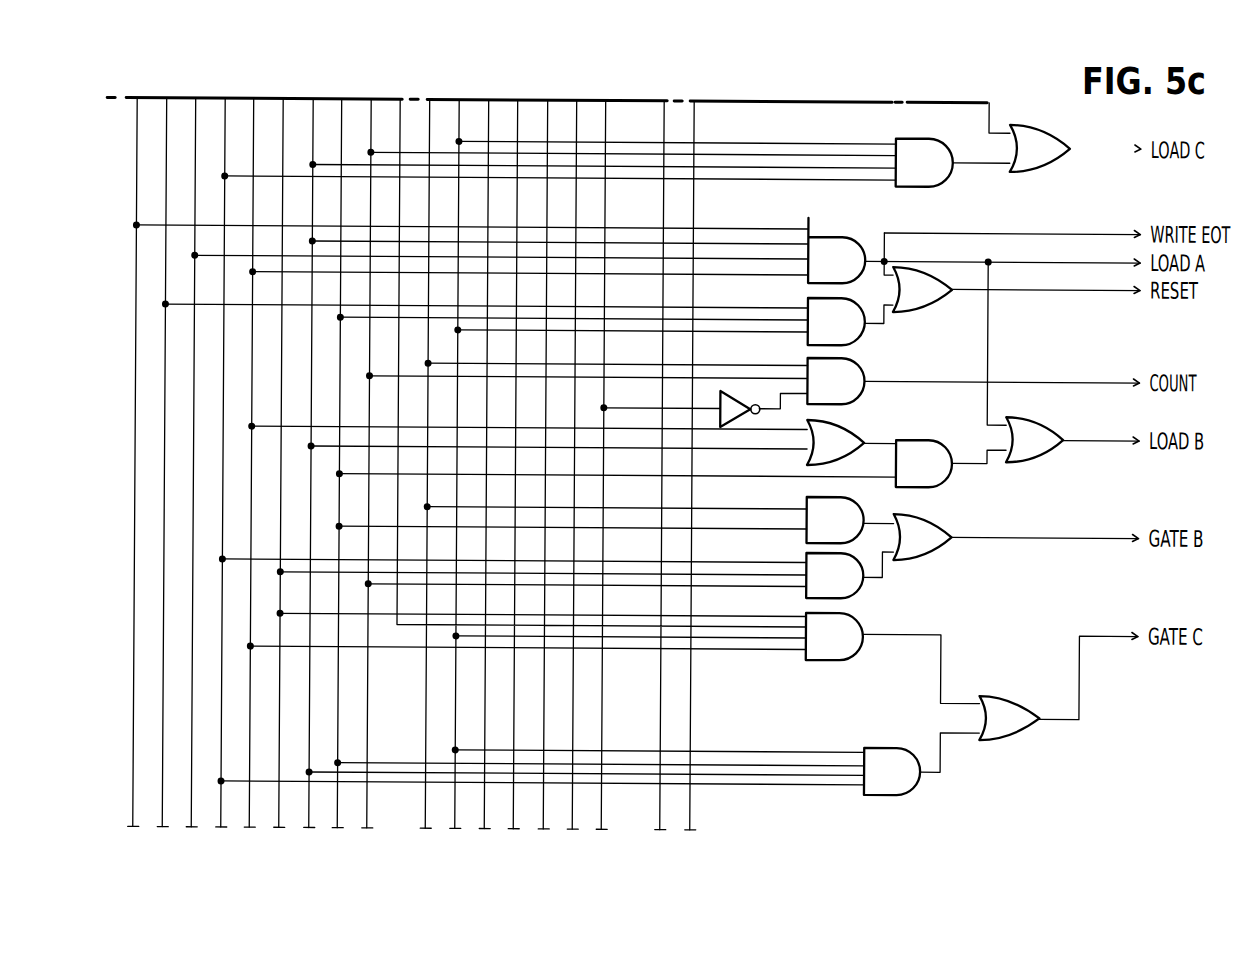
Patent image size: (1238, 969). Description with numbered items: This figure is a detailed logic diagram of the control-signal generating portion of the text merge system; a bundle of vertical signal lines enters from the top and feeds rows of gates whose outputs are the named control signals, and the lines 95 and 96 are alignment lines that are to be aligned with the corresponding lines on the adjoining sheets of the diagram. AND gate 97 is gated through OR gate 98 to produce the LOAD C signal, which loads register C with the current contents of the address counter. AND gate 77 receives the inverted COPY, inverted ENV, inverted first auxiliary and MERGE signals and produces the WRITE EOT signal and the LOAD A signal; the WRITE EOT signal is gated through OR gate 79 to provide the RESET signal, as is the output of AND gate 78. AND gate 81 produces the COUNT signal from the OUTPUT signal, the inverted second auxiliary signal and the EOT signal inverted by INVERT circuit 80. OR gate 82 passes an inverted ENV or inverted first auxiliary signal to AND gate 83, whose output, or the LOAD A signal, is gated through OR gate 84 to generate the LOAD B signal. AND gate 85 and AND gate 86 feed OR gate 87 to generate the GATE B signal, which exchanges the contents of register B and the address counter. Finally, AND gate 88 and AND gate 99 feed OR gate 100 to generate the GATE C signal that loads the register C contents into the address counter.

The AND gate 77 is at (827, 238).
The AND gate 78 is at (846, 304).
The OR gate 79 is at (921, 308).
The INVERT circuit 80 is at (740, 398).
The AND gate 81 is at (857, 361).
The OR gate 82 is at (855, 424).
The AND gate 83 is at (922, 437).
The OR gate 84 is at (1049, 417).
The AND gate 85 is at (852, 511).
The AND gate 86 is at (854, 587).
The OR gate 87 is at (941, 517).
The AND gate 88 is at (847, 659).
The alignment line 95 is at (135, 459).
The alignment line 96 is at (694, 660).
The AND gate 97 is at (931, 137).
The OR gate 98 is at (1054, 130).
The AND gate 99 is at (904, 797).
The OR gate 100 is at (1021, 732).